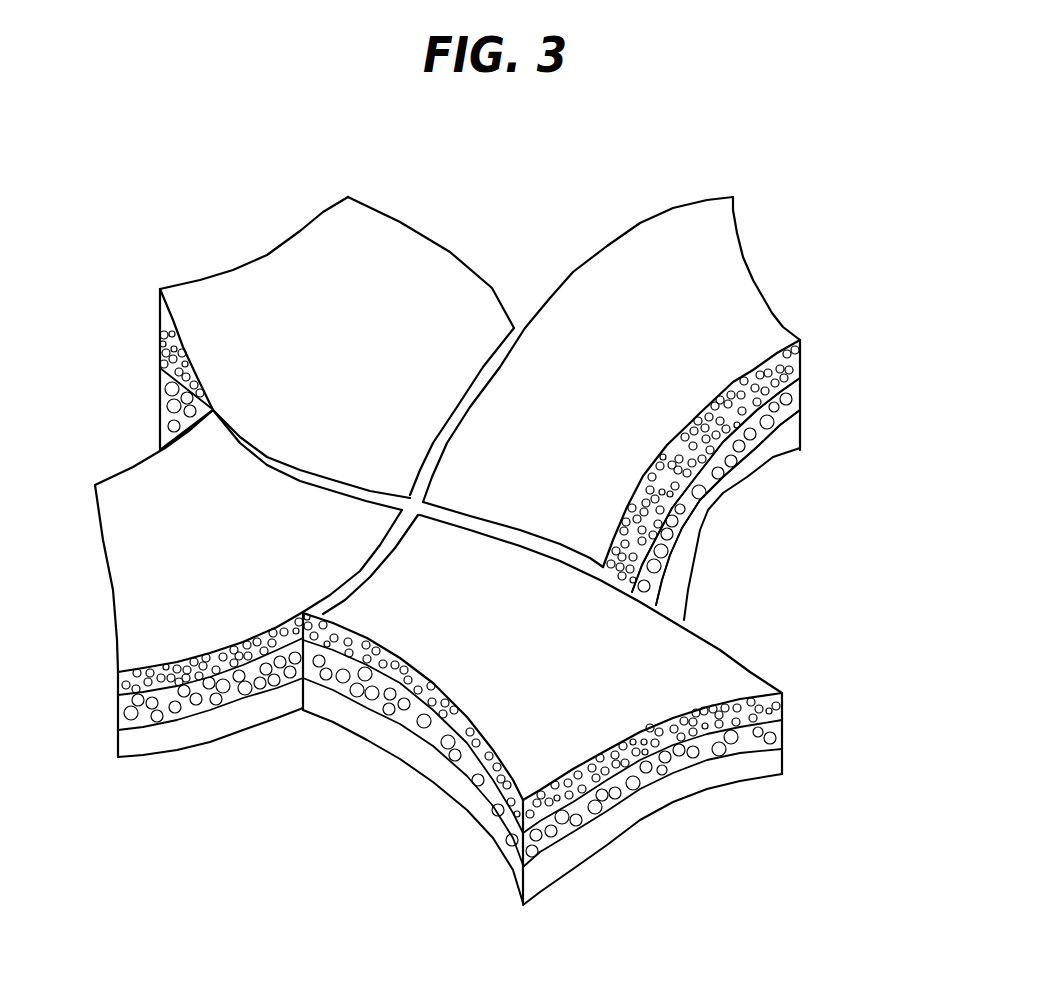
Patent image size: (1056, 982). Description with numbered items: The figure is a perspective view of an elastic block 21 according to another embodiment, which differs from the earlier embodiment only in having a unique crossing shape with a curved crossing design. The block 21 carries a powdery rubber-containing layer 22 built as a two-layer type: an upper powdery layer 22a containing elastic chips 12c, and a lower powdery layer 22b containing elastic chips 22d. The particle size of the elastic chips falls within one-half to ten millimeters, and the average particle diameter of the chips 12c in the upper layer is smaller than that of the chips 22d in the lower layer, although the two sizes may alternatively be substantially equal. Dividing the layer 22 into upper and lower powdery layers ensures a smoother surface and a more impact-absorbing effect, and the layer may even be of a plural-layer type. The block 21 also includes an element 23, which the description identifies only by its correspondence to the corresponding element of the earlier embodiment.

The elastic block 21 is at (550, 216).
The elastic chips 12c is at (745, 367).
The upper powdery layer 22a is at (803, 360).
The lower powdery layer 22b is at (803, 393).
The powdery rubber-containing layer 22 is at (947, 330).
The block layer 23 is at (783, 440).
The elastic chips 22d is at (708, 490).